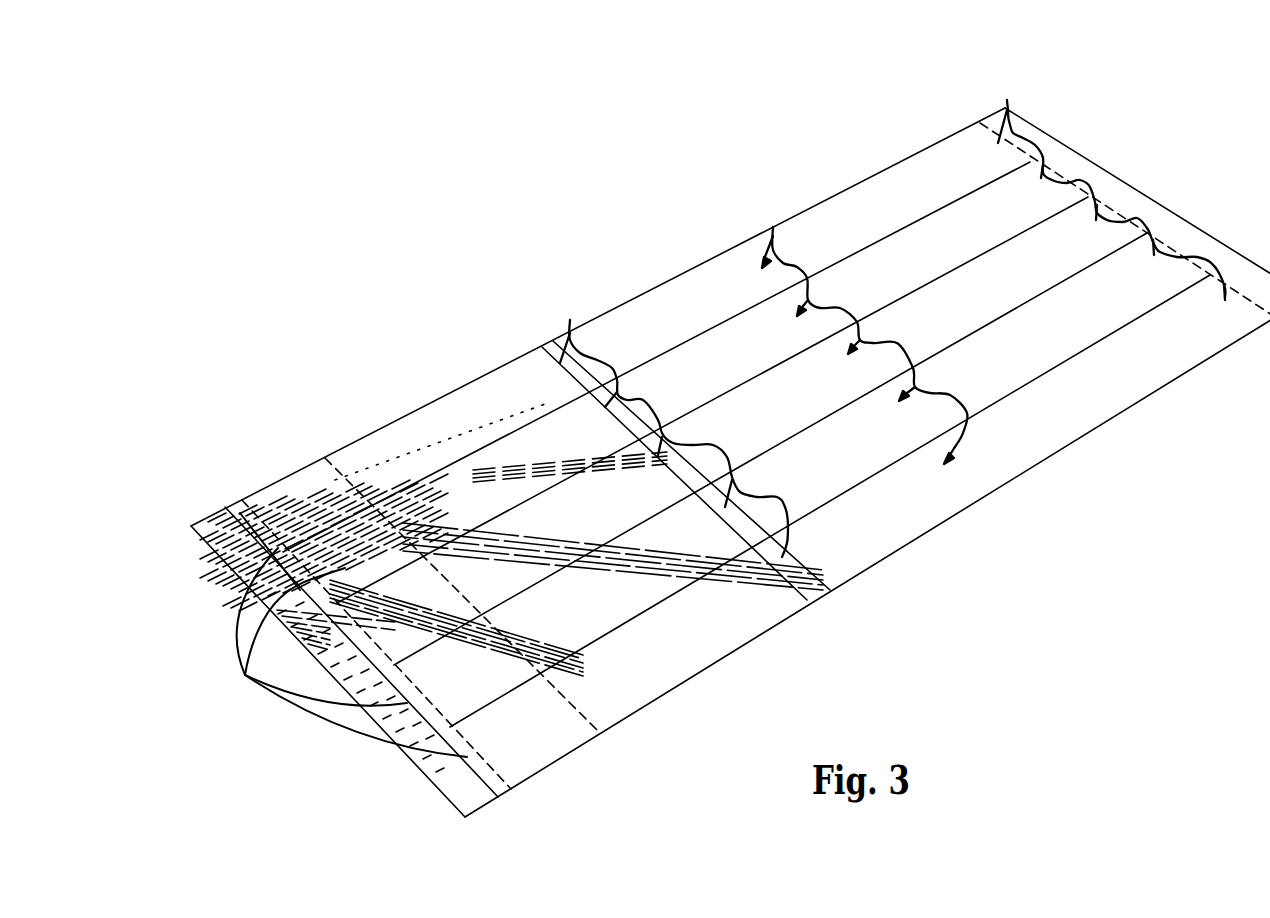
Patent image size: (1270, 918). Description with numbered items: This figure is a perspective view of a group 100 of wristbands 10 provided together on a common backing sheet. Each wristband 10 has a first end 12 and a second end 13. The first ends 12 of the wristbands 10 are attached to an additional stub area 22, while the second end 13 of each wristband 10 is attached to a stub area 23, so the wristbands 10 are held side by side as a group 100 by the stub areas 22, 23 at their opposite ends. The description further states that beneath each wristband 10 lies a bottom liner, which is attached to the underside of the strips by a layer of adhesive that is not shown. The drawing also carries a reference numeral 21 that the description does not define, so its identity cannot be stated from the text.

The group 100 is at (862, 106).
The wristband 10 is at (773, 227).
The first end 12 is at (1007, 100).
The second end 13 is at (511, 580).
The first transverse section line 21 is at (570, 320).
The additional stub area 22 is at (1123, 195).
The stub area 23 is at (440, 768).